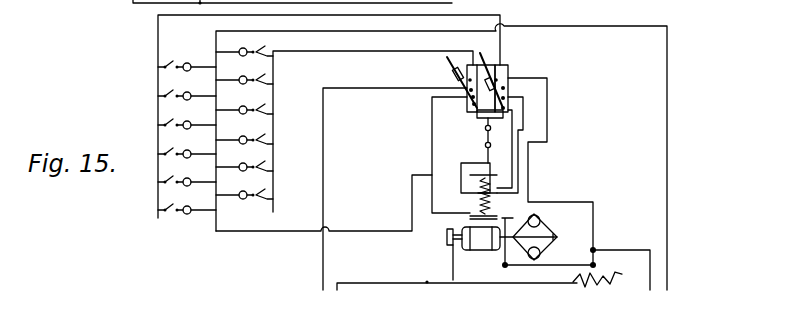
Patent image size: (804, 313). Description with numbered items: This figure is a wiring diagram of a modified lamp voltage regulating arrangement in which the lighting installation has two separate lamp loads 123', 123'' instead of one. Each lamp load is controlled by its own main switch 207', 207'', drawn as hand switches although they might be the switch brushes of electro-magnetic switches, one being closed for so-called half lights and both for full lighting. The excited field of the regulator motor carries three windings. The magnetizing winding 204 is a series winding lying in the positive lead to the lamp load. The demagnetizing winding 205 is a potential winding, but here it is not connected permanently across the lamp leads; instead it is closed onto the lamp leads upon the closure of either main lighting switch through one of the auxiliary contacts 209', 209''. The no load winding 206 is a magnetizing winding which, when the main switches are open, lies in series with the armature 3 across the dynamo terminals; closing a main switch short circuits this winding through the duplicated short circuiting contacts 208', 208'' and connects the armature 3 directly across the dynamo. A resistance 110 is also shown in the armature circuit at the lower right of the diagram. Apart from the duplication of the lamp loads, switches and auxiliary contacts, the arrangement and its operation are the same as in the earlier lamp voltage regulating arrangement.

The lamp load 123' is at (187, 137).
The lamp load 123'' is at (244, 122).
The auxiliary contact 209' is at (462, 74).
The auxiliary contact 209'' is at (539, 91).
The main switch 207' is at (433, 82).
The main switch 207'' is at (525, 77).
The short circuiting contact 208' is at (456, 114).
The short circuiting contact 208'' is at (563, 98).
The demagnetizing winding 205 is at (484, 148).
The magnetizing winding 204 is at (478, 198).
The no load winding 206 is at (470, 217).
The armature 3 is at (484, 242).
The resistance 110 is at (588, 282).